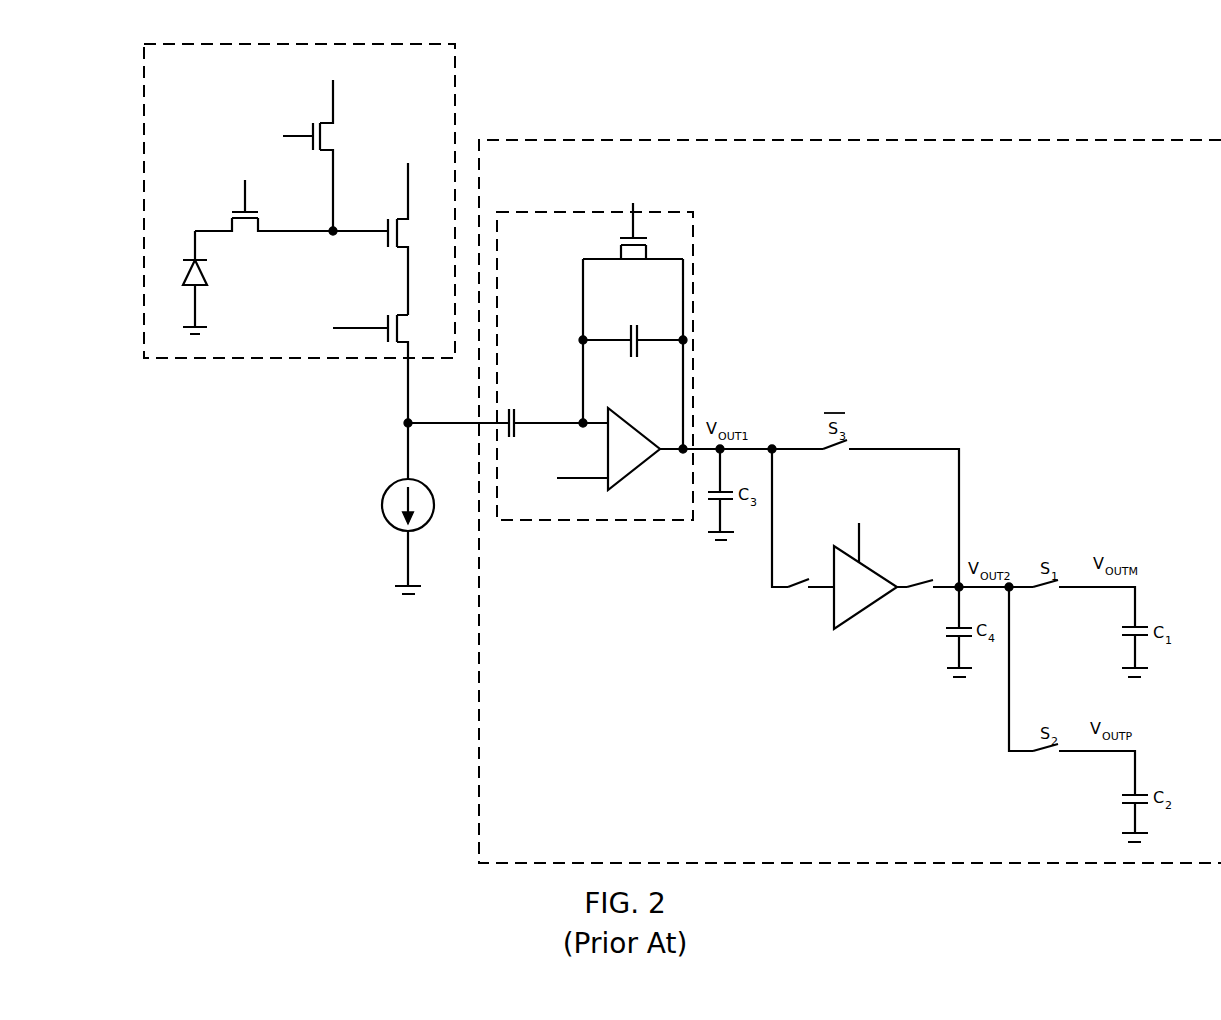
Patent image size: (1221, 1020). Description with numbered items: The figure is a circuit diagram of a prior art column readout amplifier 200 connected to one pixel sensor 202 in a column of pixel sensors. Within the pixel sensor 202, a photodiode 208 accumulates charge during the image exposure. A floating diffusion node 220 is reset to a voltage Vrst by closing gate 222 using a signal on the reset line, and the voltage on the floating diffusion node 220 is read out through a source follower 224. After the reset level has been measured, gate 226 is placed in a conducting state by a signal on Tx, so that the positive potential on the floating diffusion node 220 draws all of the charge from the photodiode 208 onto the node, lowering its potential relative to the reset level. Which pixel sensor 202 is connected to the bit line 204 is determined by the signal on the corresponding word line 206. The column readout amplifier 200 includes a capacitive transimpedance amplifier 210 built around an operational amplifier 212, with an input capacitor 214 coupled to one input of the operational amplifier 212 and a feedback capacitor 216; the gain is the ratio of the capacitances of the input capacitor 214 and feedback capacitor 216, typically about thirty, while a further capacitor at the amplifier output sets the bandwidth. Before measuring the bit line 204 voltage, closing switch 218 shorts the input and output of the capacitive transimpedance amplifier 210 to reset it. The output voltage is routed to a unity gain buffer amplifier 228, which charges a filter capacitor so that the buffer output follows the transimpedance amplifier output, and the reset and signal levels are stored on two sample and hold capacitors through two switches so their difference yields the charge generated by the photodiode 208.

The column readout amplifier 200 is at (855, 140).
The pixel sensor 202 is at (300, 358).
The bit line 204 is at (408, 378).
The word line 206 is at (368, 364).
The photodiode 208 is at (176, 270).
The capacitive transimpedance amplifier 210 is at (597, 520).
The operational amplifier 212 is at (637, 484).
The input capacitor 214 is at (512, 393).
The feedback capacitor 216 is at (637, 308).
The switch 218 is at (658, 239).
The floating diffusion node 220 is at (325, 244).
The gate 222 is at (340, 132).
The source follower 224 is at (388, 230).
The gate 226 is at (247, 240).
The buffer amplifier 228 is at (859, 628).